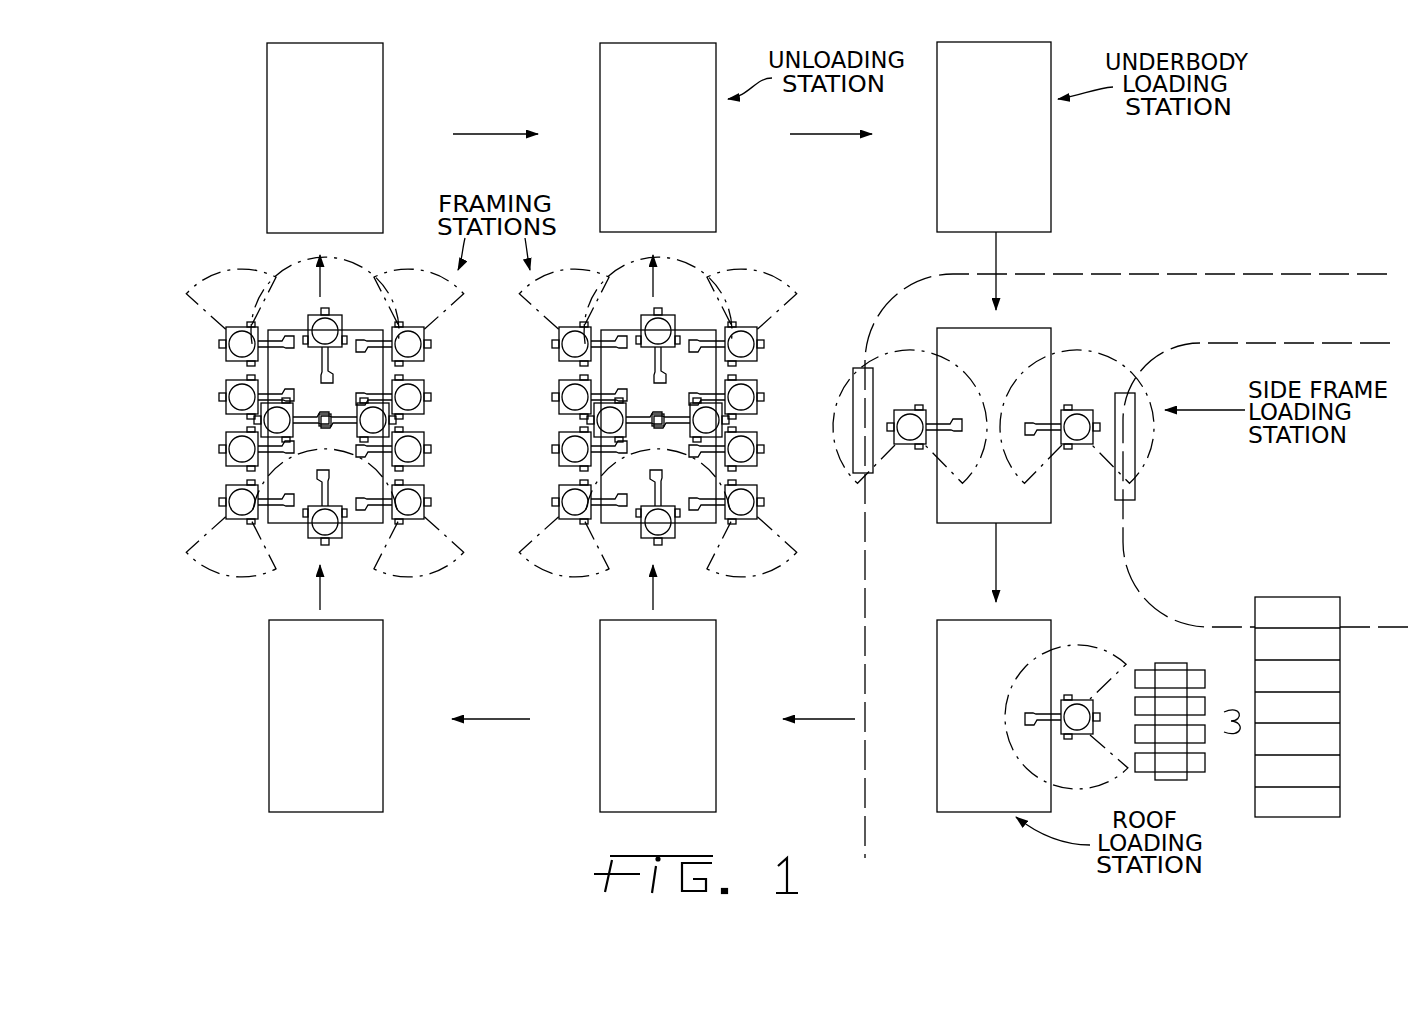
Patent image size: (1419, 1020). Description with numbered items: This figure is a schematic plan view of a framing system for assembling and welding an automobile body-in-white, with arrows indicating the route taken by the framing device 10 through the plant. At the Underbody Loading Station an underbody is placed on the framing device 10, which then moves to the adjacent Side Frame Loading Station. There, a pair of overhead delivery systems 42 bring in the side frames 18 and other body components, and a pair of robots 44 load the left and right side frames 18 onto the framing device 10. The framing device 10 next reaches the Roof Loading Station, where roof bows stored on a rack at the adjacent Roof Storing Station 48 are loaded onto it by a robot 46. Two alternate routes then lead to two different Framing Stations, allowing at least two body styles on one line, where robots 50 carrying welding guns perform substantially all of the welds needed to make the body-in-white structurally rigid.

The framing device 10 is at (272, 102).
The side frames 18 is at (858, 438).
The overhead delivery systems 42 is at (1312, 275).
The robots 44 is at (905, 412).
The robot 46 is at (1080, 705).
The Roof Storing Station 48 is at (1348, 706).
The robots 50 is at (320, 323).